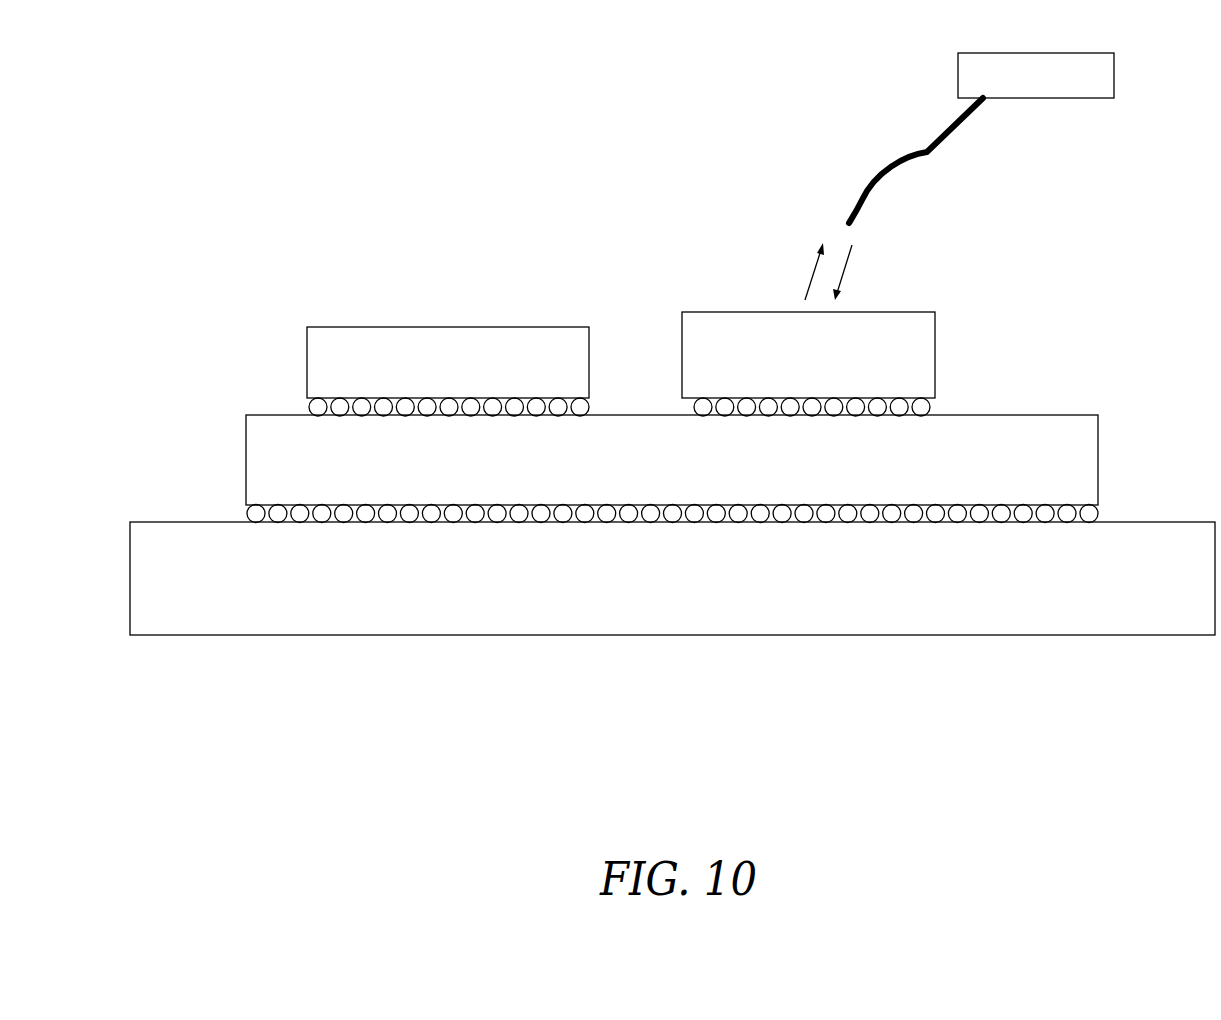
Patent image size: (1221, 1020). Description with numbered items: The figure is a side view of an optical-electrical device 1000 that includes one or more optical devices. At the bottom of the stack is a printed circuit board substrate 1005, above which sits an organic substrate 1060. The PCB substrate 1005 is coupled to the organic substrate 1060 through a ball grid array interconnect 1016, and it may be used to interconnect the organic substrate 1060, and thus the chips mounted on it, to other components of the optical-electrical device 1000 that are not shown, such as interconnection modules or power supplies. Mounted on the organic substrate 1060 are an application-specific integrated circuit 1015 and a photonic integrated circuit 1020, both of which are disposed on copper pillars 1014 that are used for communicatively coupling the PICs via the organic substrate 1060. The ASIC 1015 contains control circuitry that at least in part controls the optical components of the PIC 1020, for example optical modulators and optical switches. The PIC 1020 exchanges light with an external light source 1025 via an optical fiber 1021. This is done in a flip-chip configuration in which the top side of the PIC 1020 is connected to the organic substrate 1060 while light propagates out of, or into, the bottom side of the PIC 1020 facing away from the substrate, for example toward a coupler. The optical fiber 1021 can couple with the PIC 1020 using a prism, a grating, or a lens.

The optical-electrical device 1000 is at (316, 156).
The printed circuit board substrate 1005 is at (646, 606).
The copper pillars 1014 is at (295, 405).
The application-specific integrated circuit 1015 is at (422, 392).
The ball grid array interconnect 1016 is at (220, 508).
The photonic integrated circuit 1020 is at (783, 385).
The optical fiber 1021 is at (887, 162).
The external light source 1025 is at (1011, 87).
The organic substrate 1060 is at (646, 489).